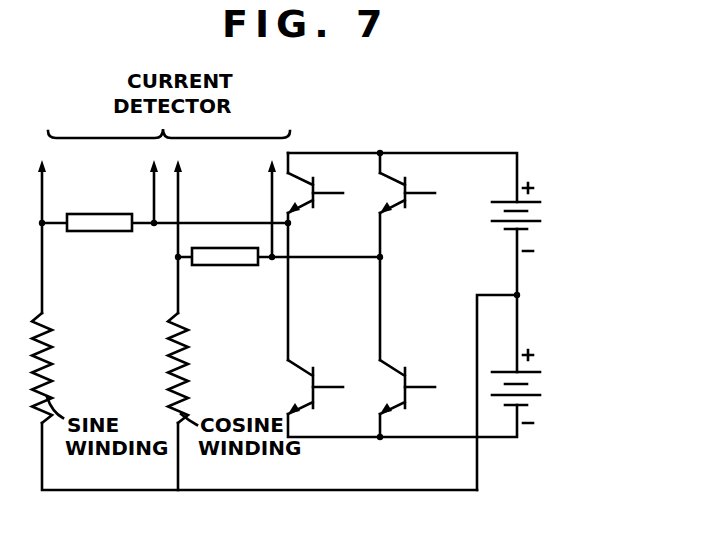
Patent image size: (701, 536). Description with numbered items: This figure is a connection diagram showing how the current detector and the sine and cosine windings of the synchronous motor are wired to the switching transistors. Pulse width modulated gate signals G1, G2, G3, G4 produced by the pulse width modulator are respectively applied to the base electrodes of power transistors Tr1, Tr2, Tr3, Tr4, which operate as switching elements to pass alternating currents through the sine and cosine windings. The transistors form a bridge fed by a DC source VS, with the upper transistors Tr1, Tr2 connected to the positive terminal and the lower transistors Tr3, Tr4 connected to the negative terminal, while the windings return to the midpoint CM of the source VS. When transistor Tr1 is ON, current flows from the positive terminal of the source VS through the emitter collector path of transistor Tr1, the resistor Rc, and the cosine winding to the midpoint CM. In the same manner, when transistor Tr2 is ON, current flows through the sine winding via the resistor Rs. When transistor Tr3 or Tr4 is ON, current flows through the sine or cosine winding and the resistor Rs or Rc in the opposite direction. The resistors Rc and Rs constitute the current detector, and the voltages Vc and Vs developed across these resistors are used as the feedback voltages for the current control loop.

The voltage across resistor Rs Vs is at (152, 161).
The voltage across resistor Rc Vc is at (270, 161).
The resistor Rs is at (165, 238).
The resistor Rc is at (279, 271).
The power transistor Tr1 is at (313, 207).
The power transistor Tr2 is at (405, 207).
The power transistor Tr3 is at (313, 369).
The power transistor Tr4 is at (416, 356).
The pulse width modulated gate signal G1 is at (437, 195).
The pulse width modulated gate signal G2 is at (345, 195).
The pulse width modulated gate signal G3 is at (345, 390).
The pulse width modulated gate signal G4 is at (437, 390).
The DC source VS is at (541, 214).
The midpoint of the source CM is at (517, 388).